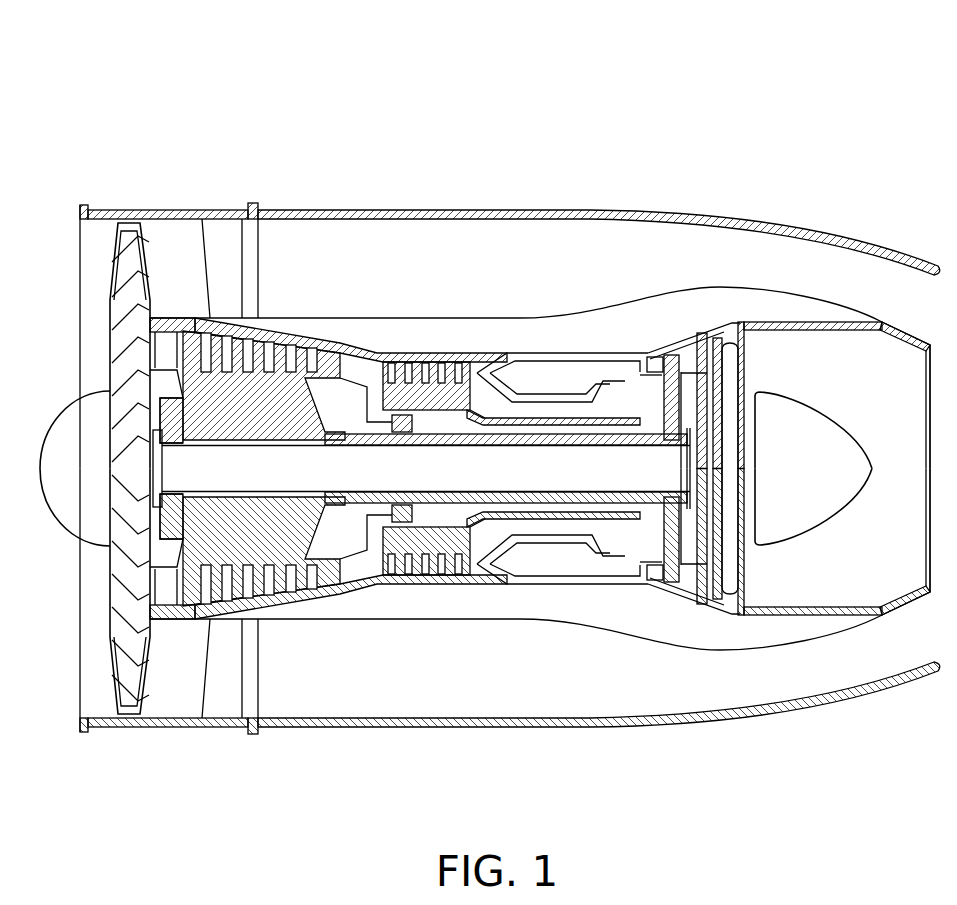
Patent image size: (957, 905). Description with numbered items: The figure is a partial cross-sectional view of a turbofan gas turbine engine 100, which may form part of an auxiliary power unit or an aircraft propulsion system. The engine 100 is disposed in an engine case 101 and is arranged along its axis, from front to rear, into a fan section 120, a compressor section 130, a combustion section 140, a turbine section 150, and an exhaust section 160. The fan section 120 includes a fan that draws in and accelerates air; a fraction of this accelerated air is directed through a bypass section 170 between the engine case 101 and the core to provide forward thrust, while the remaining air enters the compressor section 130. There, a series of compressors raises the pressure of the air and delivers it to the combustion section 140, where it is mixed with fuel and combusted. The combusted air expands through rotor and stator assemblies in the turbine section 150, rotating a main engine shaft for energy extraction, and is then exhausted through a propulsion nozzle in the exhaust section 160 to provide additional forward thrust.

The gas turbine engine 100 is at (314, 111).
The engine case 101 is at (320, 211).
The bypass section 170 is at (430, 238).
The fan section 120 is at (163, 762).
The compressor section 130 is at (163, 762).
The combustion section 140 is at (422, 762).
The turbine section 150 is at (588, 762).
The exhaust section 160 is at (750, 762).